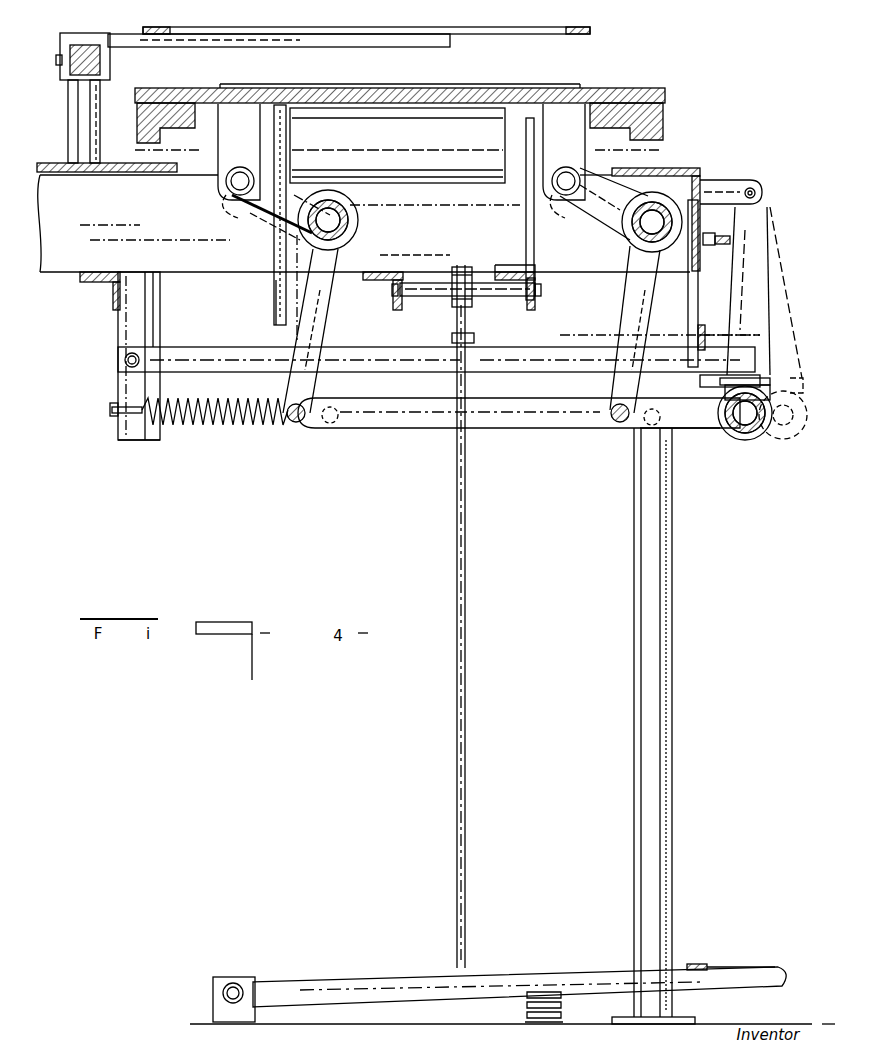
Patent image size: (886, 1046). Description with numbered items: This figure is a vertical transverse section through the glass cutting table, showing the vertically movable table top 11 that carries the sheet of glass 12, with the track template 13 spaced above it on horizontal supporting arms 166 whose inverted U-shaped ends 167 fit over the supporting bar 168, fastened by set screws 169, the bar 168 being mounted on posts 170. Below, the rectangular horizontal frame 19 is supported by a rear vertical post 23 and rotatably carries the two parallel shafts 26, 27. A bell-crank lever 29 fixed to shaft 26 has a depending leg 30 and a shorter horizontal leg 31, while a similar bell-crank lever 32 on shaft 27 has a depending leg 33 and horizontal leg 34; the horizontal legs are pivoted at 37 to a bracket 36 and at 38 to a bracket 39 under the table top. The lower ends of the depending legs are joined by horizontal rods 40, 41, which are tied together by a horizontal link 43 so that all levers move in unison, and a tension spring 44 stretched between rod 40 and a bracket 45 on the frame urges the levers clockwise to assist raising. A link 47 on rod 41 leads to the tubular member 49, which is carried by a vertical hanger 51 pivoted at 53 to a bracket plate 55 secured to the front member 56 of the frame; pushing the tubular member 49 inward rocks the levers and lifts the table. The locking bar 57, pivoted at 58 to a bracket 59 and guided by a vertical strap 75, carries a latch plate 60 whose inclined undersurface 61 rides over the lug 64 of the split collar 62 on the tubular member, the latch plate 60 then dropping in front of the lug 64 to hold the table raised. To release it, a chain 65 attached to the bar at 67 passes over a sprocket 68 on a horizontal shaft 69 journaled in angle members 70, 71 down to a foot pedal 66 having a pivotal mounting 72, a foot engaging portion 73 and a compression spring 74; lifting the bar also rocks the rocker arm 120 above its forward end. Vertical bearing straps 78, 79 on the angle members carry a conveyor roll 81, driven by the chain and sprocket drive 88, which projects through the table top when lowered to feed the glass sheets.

The table top 11 is at (638, 100).
The sheet of glass 12 is at (480, 90).
The track template 13 is at (482, 30).
The horizontal frame 19 is at (62, 272).
The vertical post 23 is at (658, 694).
The shaft 26 is at (354, 218).
The shaft 27 is at (634, 235).
The bell-crank lever 29 is at (310, 192).
The depending leg 30 is at (322, 298).
The horizontal leg 31 is at (242, 210).
The bell-crank lever 32 is at (658, 182).
The depending leg 33 is at (626, 296).
The horizontal leg 34 is at (594, 222).
The bracket 36 is at (226, 130).
The pivot 37 is at (240, 172).
The pivot 38 is at (566, 172).
The bracket 39 is at (572, 142).
The horizontal rod 40 is at (288, 424).
The horizontal rod 41 is at (612, 406).
The horizontal link 43 is at (497, 410).
The tension spring 44 is at (210, 424).
The bracket 45 is at (136, 434).
The link 47 is at (700, 428).
The tubular member 49 is at (778, 440).
The vertical hanger 51 is at (752, 282).
The pivot 53 is at (758, 191).
The bracket plate 55 is at (740, 186).
The arm 56 is at (730, 186).
The locking bar 57 is at (376, 360).
The pivot 58 is at (124, 358).
The bracket 59 is at (136, 318).
The latch plate 60 is at (735, 378).
The inclined undersurface 61 is at (760, 382).
The split collar 62 is at (736, 438).
The lug 64 is at (700, 387).
The chain 65 is at (462, 567).
The foot pedal 66 is at (500, 980).
The chain attachment 67 is at (474, 342).
The sprocket 68 is at (470, 272).
The horizontal shaft 69 is at (416, 297).
The angle member 70 is at (386, 272).
The angle member 71 is at (536, 298).
The pivotal mounting 72 is at (234, 983).
The foot engaging portion 73 is at (726, 966).
The compression spring 74 is at (562, 1010).
The vertical strap 75 is at (695, 298).
The bearing strap 78 is at (526, 191).
The bearing strap 79 is at (266, 236).
The conveyor roll 81 is at (422, 168).
The chain and sprocket drive 88 is at (276, 296).
The rocker arm 120 is at (708, 324).
The supporting arm 166 is at (205, 43).
The inverted U-shaped end 167 is at (82, 36).
The supporting bar 168 is at (72, 90).
The set screw 169 is at (56, 58).
The post 170 is at (97, 108).